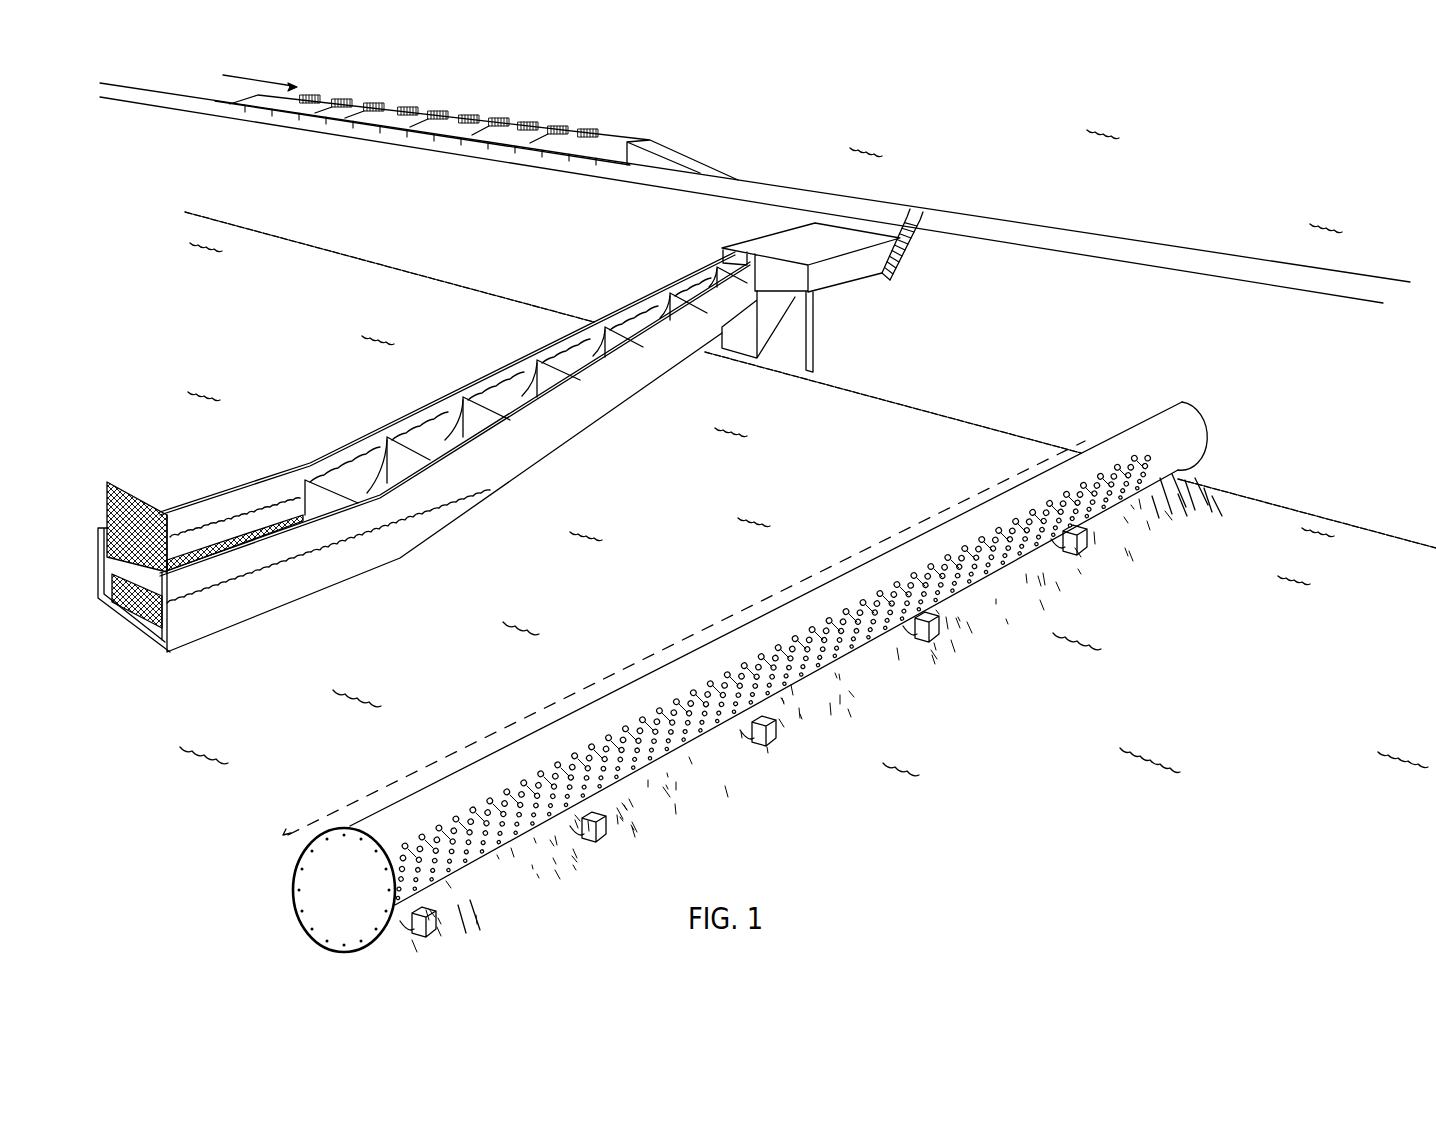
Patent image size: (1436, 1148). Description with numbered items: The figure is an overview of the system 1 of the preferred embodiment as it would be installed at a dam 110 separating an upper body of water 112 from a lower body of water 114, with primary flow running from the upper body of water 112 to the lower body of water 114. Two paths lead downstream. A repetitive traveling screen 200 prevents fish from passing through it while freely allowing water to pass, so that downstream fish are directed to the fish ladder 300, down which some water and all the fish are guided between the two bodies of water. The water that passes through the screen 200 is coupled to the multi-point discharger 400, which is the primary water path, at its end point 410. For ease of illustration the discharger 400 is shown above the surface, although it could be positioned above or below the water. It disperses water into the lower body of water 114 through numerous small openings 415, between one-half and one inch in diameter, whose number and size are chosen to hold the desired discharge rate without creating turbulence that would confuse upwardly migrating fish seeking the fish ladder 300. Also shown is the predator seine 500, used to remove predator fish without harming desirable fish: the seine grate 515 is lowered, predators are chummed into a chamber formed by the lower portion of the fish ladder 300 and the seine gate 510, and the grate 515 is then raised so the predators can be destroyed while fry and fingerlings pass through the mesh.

The aquaculture water handling system 1 is at (444, 88).
The dam 110 is at (280, 213).
The upper body of water 112 is at (816, 101).
The lower body of water 114 is at (649, 511).
The repetitive traveling screen 200 is at (547, 122).
The fish ladder 300 is at (628, 382).
The multi-point discharger 400 is at (752, 637).
The end point of discharger 410 is at (1177, 401).
The small openings 415 is at (442, 833).
The predator seine 500 is at (242, 500).
The seine gate 510 is at (115, 482).
The seine grate 515 is at (152, 617).